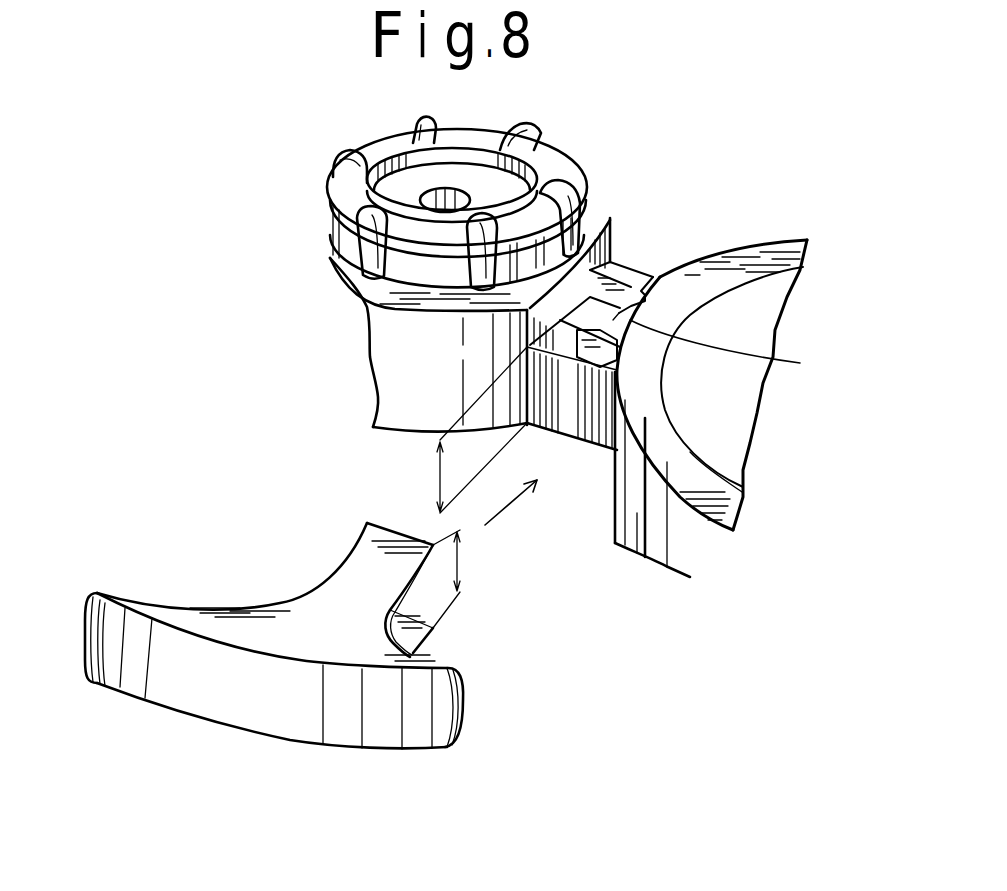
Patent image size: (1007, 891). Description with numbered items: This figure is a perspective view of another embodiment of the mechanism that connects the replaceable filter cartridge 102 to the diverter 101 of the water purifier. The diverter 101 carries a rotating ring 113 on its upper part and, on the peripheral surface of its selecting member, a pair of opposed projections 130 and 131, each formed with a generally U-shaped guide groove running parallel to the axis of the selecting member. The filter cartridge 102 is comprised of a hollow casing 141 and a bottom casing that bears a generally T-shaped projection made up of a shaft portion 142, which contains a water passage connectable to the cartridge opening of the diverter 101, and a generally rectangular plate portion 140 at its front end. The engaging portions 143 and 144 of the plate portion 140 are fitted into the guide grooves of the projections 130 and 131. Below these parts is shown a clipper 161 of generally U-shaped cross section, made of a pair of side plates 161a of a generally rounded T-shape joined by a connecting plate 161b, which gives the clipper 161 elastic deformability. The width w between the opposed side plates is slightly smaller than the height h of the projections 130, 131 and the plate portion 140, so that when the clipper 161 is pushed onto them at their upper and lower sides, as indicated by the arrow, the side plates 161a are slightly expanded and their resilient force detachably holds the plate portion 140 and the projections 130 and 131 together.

The diverter 101 is at (377, 333).
The replaceable filter cartridge 102 is at (773, 250).
The rotating ring 113 is at (337, 180).
The projection 130 is at (652, 278).
The projection 131 is at (560, 357).
The plate portion 140 is at (595, 222).
The hollow casing 141 is at (637, 517).
The shaft portion 142 is at (790, 363).
The engaging portion 143 is at (630, 268).
The engaging portion 144 is at (532, 427).
The clipper 161 is at (215, 597).
The side plate 161a is at (300, 598).
The connecting plate 161b is at (457, 715).